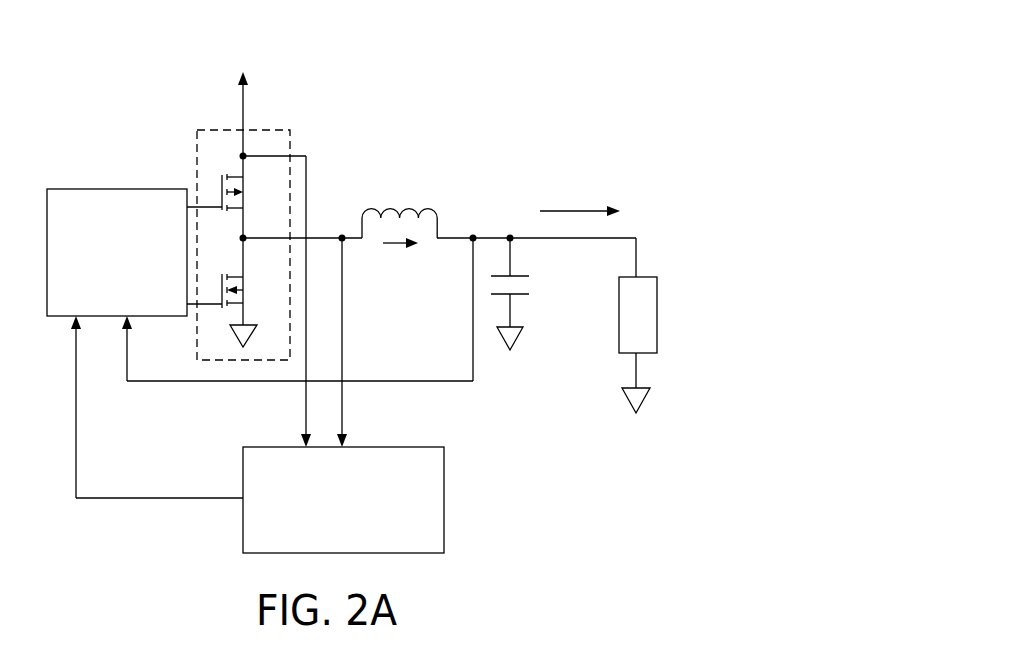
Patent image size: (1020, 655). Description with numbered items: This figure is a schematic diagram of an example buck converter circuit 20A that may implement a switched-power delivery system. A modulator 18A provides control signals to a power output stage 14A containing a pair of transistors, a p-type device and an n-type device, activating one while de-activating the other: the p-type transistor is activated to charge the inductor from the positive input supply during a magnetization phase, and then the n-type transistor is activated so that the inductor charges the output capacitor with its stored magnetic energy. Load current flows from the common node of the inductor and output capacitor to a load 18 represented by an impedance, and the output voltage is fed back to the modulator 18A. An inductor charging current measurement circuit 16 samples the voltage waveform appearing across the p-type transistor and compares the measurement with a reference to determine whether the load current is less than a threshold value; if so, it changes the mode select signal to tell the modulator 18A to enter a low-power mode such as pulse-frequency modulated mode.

The buck converter circuit 20A is at (536, 91).
The power output stage 14A is at (273, 130).
The modulator 18A is at (112, 189).
The inductor charging current measurement circuit 16 is at (386, 447).
The load 18 is at (657, 277).